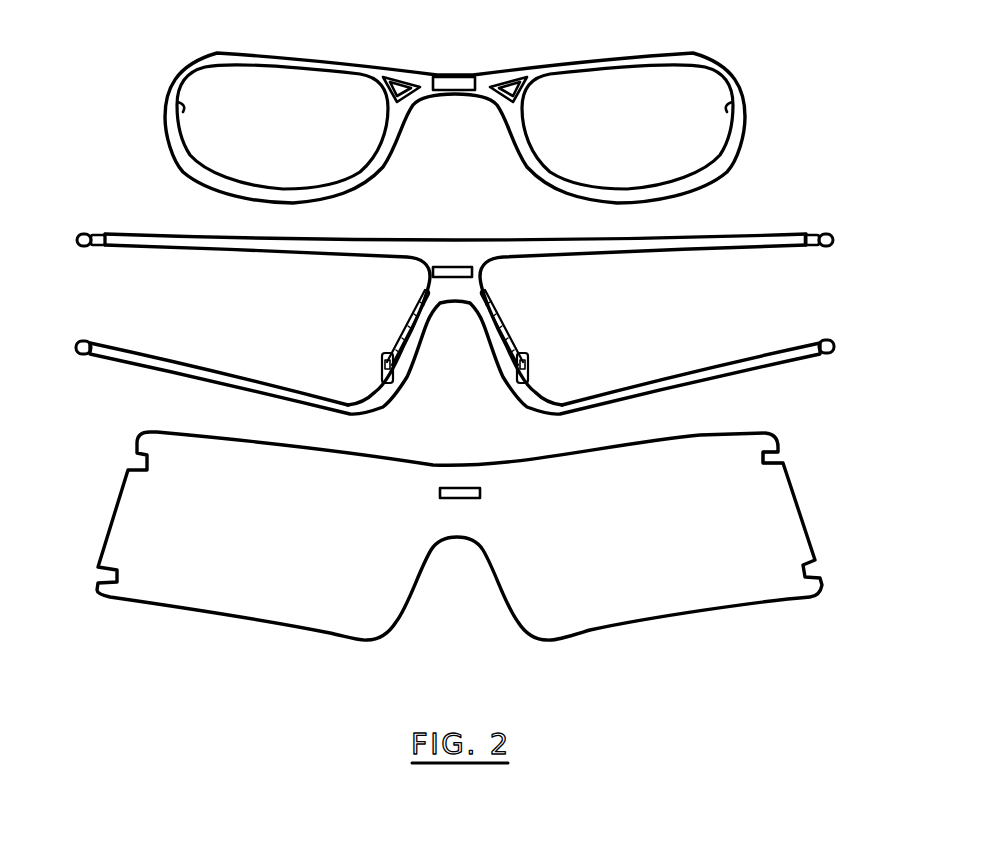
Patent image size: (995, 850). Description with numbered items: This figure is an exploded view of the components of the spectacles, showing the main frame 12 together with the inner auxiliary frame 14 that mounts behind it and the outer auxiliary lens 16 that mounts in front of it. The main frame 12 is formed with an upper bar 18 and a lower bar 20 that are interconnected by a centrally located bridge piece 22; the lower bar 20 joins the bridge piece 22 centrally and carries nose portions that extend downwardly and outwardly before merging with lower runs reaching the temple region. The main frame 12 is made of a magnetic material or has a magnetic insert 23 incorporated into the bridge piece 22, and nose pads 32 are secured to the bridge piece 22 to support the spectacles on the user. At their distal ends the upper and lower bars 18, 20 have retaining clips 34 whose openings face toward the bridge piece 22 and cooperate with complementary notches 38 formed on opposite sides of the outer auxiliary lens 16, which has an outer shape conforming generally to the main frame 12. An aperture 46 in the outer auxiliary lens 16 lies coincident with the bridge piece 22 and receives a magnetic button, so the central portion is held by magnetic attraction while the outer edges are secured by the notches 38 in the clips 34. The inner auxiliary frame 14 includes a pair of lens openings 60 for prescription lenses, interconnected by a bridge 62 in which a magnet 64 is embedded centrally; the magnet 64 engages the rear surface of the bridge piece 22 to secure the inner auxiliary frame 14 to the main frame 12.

The main frame 12 is at (818, 302).
The inner auxiliary frame 14 is at (287, 48).
The outer auxiliary lens 16 is at (160, 428).
The upper bar 18 is at (637, 244).
The lower bar 20 is at (723, 362).
The bridge piece 22 is at (427, 272).
The magnetic insert 23 is at (450, 266).
The nose pads 32 is at (392, 349).
The retaining clips 34 is at (95, 233).
The notches 38 is at (782, 460).
The aperture 46 is at (465, 490).
The lens openings 60 is at (180, 118).
The bridge 62 is at (418, 77).
The magnet 64 is at (462, 94).